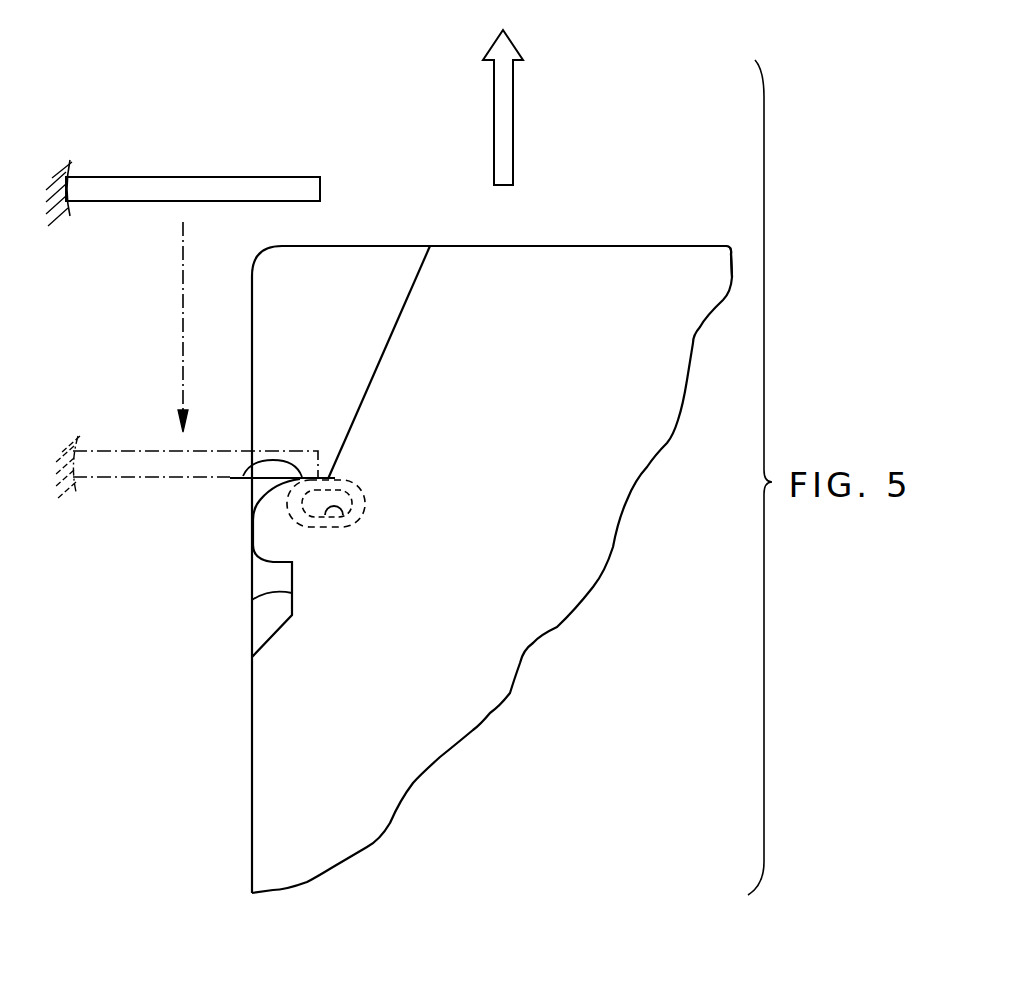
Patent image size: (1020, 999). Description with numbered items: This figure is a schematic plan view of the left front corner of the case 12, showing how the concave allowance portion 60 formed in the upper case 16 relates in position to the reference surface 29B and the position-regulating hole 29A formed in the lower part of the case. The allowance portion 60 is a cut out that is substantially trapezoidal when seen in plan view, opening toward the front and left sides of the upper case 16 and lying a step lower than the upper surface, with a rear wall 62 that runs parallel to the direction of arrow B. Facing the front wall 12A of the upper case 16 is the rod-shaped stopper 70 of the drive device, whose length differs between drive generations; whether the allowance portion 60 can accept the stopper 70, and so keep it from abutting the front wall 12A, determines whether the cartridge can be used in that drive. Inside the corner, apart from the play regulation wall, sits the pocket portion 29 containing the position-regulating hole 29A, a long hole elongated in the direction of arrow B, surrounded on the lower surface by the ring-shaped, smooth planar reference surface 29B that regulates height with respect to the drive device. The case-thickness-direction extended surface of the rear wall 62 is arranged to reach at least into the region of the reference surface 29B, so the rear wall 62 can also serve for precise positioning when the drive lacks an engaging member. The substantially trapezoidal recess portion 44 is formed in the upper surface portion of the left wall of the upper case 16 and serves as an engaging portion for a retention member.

The stopper 70 is at (182, 190).
The allowance portion 60 is at (352, 286).
The upper case 16 is at (557, 266).
The front wall 12A is at (658, 247).
The case 12 is at (667, 445).
The rear wall 62 is at (255, 468).
The recess portion 44 is at (252, 598).
The pocket portion 29 is at (365, 509).
The position-regulating hole 29A is at (343, 515).
The reference surface 29B is at (355, 487).